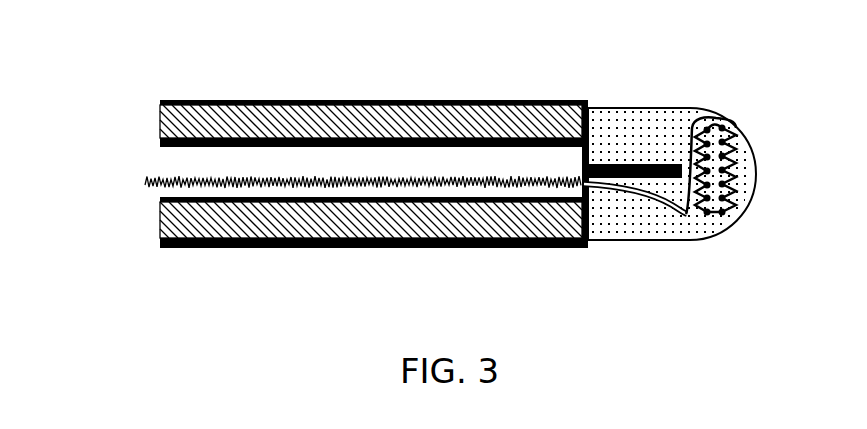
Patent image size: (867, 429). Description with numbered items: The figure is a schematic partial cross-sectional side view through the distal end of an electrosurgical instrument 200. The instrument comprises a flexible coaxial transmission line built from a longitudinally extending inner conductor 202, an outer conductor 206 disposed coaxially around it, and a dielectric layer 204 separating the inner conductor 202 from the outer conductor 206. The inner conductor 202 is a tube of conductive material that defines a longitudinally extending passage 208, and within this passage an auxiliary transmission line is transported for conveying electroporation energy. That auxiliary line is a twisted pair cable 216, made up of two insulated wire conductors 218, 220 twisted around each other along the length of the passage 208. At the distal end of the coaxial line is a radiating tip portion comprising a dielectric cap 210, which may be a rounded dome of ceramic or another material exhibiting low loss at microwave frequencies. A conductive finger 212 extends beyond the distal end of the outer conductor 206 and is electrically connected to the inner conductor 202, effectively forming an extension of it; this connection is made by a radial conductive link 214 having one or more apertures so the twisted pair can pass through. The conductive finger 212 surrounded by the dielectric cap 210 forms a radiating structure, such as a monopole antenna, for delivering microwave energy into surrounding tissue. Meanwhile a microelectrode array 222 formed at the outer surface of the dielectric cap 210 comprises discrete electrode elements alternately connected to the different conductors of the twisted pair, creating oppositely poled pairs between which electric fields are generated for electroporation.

The electrosurgical instrument 200 is at (138, 292).
The inner conductor 202 is at (435, 135).
The dielectric layer 204 is at (300, 123).
The outer conductor 206 is at (208, 100).
The longitudinally extending passage 208 is at (343, 157).
The dielectric cap 210 is at (628, 227).
The conductive finger 212 is at (628, 162).
The radial conductive link 214 is at (589, 160).
The twisted pair cable 216 is at (262, 190).
The insulated wire conductor 218 is at (683, 217).
The insulated wire conductor 220 is at (643, 192).
The microelectrode array 222 is at (738, 110).